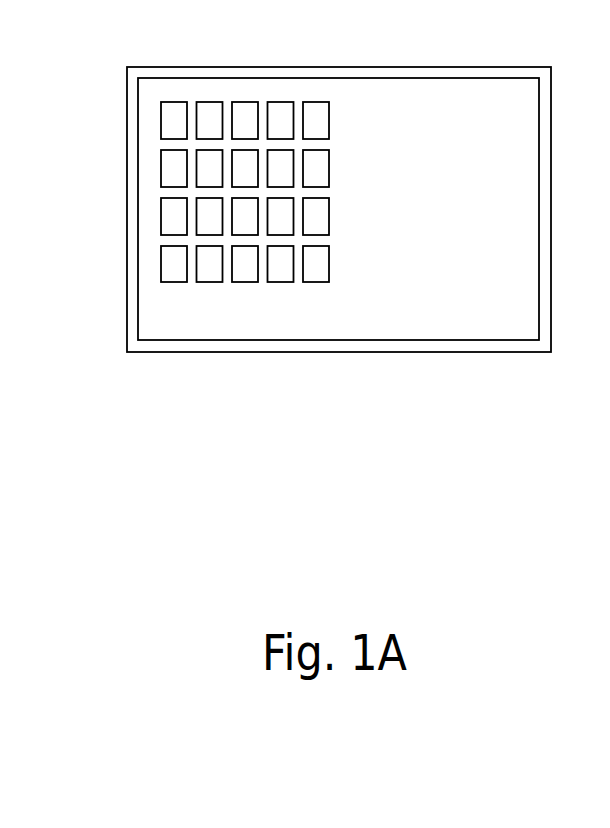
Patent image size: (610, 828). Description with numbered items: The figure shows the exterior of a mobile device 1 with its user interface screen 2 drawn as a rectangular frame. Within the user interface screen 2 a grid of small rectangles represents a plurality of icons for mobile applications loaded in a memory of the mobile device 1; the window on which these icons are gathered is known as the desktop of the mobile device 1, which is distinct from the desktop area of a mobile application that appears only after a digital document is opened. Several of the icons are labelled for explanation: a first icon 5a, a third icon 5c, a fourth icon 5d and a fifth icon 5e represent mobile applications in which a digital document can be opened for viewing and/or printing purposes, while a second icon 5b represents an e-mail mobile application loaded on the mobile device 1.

The mobile device 1 is at (286, 369).
The user interface screen 2 is at (540, 150).
The first icon 5a is at (315, 127).
The second icon 5b is at (315, 222).
The third icon 5c is at (315, 269).
The fourth icon 5d is at (175, 268).
The fifth icon 5e is at (247, 268).